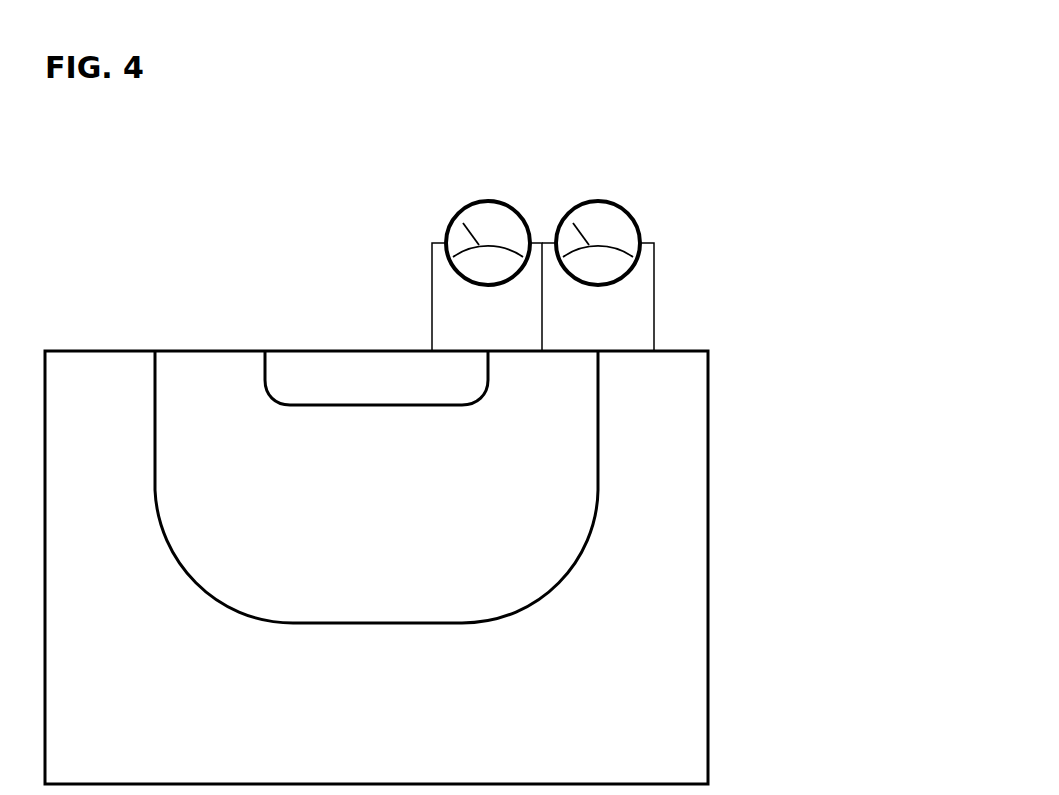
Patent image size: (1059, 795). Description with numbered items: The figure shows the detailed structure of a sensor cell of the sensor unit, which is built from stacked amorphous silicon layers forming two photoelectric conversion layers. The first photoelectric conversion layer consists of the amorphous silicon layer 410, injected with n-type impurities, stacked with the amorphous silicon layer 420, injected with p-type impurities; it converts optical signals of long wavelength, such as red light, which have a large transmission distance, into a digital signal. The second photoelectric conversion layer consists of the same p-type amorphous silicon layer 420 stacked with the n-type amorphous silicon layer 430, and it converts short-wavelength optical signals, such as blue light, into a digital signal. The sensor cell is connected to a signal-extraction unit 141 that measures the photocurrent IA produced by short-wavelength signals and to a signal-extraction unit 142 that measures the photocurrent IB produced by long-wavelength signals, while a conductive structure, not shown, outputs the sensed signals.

The amorphous silicon layer 410 is at (90, 349).
The amorphous silicon layer 420 is at (200, 349).
The amorphous silicon layer 430 is at (312, 349).
The signal-extraction unit 141 is at (507, 201).
The signal-extraction unit 142 is at (624, 208).